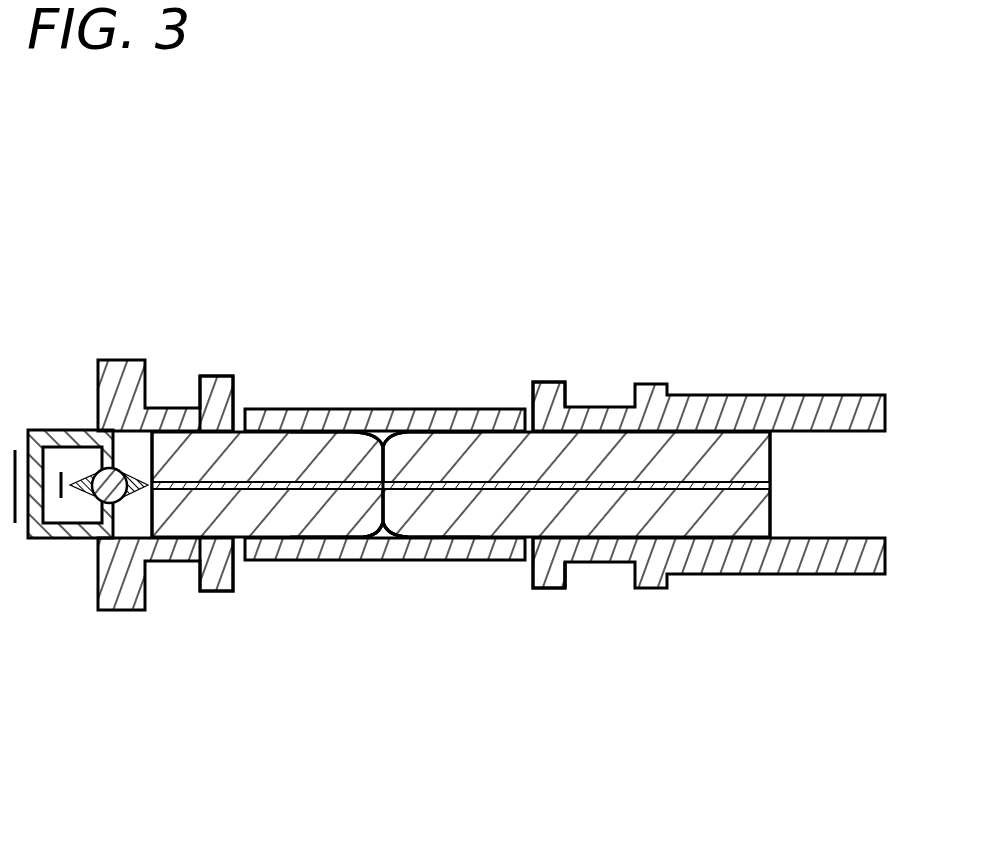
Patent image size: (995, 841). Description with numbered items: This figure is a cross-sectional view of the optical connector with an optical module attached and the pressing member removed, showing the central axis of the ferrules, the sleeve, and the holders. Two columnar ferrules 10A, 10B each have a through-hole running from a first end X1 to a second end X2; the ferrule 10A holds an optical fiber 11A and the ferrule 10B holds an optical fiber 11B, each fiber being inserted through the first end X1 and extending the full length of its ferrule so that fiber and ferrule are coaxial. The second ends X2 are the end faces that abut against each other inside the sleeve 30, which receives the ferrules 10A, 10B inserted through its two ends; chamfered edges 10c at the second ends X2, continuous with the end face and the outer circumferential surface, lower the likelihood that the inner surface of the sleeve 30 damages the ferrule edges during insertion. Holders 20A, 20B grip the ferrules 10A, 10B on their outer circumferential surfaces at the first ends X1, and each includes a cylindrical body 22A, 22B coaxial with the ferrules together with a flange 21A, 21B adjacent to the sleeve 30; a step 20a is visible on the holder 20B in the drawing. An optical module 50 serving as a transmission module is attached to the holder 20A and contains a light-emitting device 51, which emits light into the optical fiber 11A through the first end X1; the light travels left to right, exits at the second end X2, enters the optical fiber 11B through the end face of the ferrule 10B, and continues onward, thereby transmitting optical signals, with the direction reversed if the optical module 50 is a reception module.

The ferrule 10A is at (267, 343).
The ferrule 10B is at (576, 337).
The chamfered edge 10c is at (375, 428).
The optical fiber 11A is at (330, 470).
The optical fiber 11B is at (451, 470).
The holder 20A is at (124, 343).
The holder 20B is at (709, 463).
The step portion of fitting 20a is at (567, 575).
The flange 21A is at (212, 400).
The flange 21B is at (540, 397).
The body 22A is at (170, 408).
The body 22B is at (578, 420).
The sleeve 30 is at (425, 417).
The optical module 50 is at (55, 528).
The light-emitting device 51 is at (61, 472).
The first end X1 is at (148, 507).
The second end X2 is at (368, 535).